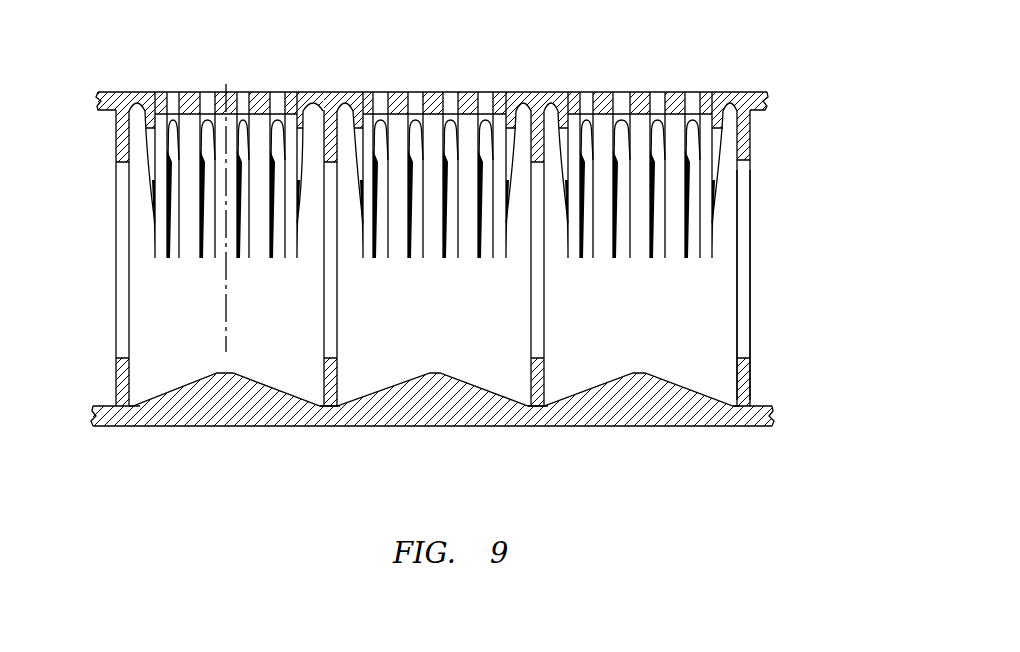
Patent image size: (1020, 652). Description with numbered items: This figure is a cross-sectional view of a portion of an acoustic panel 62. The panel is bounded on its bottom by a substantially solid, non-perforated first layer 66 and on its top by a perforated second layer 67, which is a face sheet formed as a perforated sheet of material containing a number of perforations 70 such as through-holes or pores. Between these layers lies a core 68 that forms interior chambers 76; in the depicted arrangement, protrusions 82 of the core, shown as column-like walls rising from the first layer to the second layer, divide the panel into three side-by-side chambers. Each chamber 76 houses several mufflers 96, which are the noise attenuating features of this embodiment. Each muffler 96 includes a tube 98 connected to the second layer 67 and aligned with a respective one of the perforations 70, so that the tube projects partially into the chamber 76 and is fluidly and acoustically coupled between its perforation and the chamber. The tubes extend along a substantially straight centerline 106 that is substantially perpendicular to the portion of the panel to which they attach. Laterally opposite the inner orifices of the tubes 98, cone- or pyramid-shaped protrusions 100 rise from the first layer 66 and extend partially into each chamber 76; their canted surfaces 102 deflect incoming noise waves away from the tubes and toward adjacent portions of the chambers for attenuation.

The acoustic panel 62 is at (448, 260).
The first layer 66 is at (432, 442).
The second layer 67 is at (436, 69).
The core 68 is at (754, 247).
The perforations 70 is at (677, 98).
The interior chamber 76 is at (416, 324).
The protrusions 82 is at (122, 299).
The mufflers 96 is at (221, 260).
The tube 98 is at (235, 245).
The protrusions 100 is at (420, 403).
The canted surfaces 102 is at (373, 394).
The centerline 106 is at (226, 300).